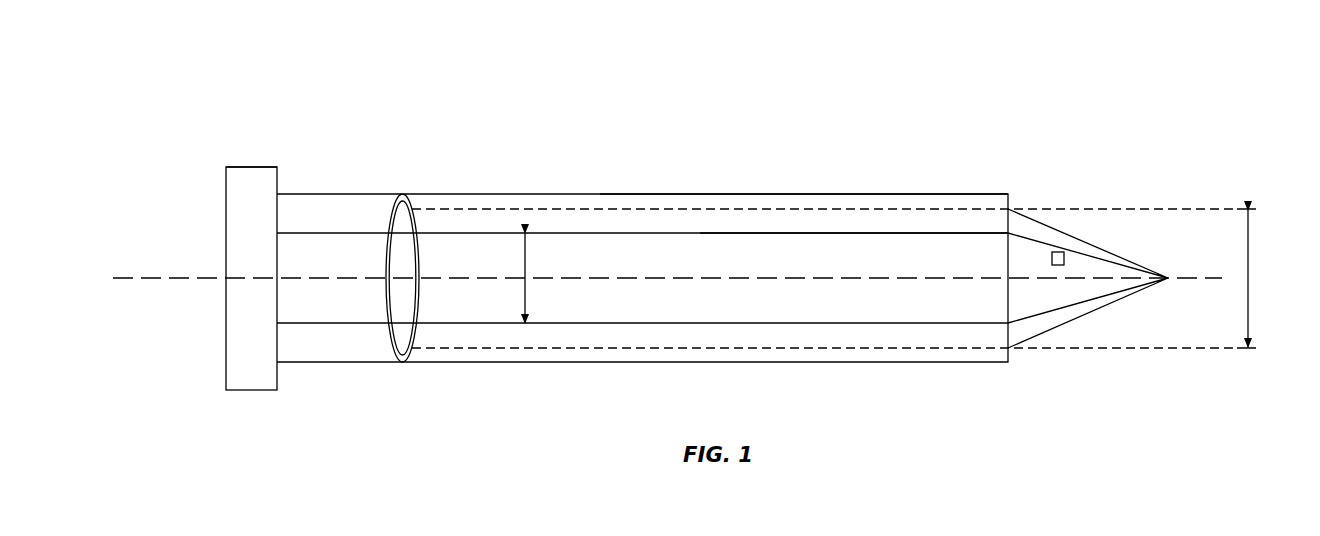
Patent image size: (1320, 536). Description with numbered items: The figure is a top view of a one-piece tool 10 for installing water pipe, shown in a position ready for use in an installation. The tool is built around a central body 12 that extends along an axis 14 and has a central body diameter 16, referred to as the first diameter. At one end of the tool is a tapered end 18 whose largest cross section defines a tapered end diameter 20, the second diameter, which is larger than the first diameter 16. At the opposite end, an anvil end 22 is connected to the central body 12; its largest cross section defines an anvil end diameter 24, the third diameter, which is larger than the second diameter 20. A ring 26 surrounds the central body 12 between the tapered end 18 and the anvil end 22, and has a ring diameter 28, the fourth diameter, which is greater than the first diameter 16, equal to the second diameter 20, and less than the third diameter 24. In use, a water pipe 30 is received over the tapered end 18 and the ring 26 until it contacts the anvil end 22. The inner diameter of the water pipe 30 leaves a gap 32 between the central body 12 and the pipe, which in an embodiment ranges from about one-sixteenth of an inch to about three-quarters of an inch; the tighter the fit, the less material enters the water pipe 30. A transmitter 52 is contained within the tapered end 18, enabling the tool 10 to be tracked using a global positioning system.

The tool 10 is at (185, 101).
The central body 12 is at (657, 323).
The axis 14 is at (180, 277).
The central body diameter 16 is at (525, 268).
The tapered end 18 is at (1078, 310).
The tapered end diameter 20 is at (1253, 278).
The anvil end 22 is at (226, 300).
The anvil end diameter 24 is at (253, 167).
The ring 26 is at (396, 200).
The ring diameter 28 is at (403, 268).
The water pipe 30 is at (752, 194).
The gap 32 is at (885, 232).
The transmitter 52 is at (1064, 258).